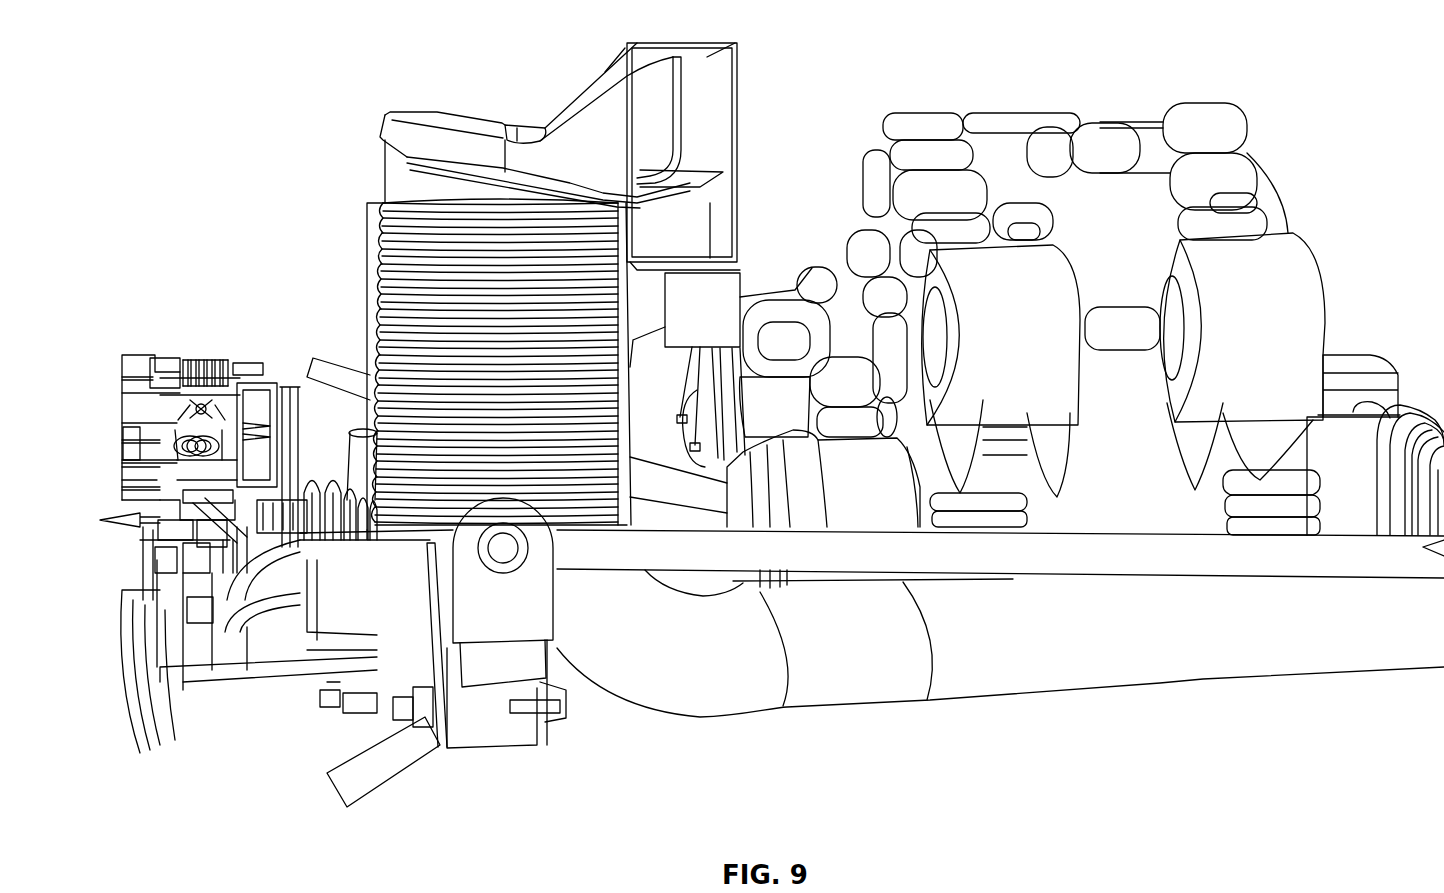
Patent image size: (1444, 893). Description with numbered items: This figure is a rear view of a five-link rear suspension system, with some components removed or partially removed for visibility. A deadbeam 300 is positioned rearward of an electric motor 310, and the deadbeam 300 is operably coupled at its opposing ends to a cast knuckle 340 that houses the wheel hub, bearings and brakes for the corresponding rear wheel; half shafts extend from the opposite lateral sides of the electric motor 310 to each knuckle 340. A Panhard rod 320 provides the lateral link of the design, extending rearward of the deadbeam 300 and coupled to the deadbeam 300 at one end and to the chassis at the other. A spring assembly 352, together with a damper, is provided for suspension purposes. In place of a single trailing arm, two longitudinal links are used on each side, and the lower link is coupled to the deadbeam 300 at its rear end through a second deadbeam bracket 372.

The deadbeam 300 is at (1115, 637).
The electric motor 310 is at (1105, 148).
The Panhard rod 320 is at (1287, 547).
The cast knuckle 340 is at (200, 610).
The spring assembly 352 is at (463, 243).
The second deadbeam bracket 372 is at (447, 607).